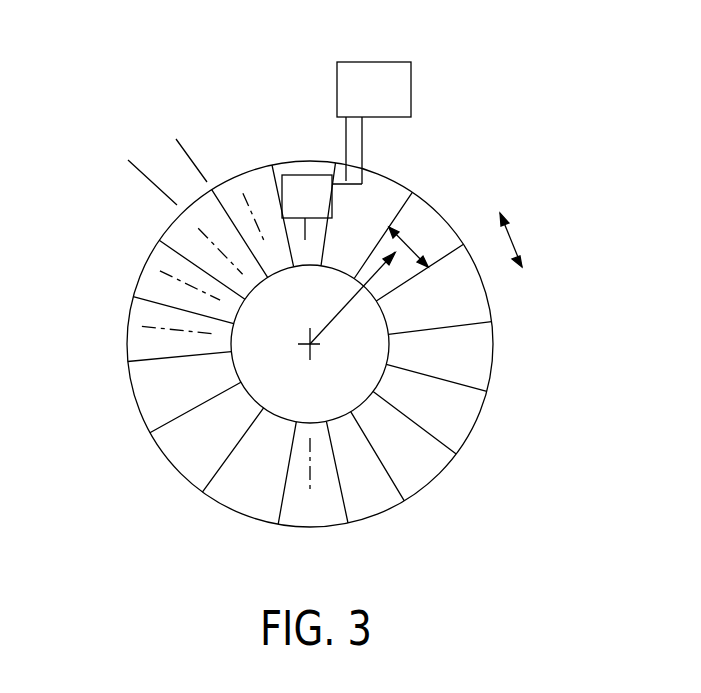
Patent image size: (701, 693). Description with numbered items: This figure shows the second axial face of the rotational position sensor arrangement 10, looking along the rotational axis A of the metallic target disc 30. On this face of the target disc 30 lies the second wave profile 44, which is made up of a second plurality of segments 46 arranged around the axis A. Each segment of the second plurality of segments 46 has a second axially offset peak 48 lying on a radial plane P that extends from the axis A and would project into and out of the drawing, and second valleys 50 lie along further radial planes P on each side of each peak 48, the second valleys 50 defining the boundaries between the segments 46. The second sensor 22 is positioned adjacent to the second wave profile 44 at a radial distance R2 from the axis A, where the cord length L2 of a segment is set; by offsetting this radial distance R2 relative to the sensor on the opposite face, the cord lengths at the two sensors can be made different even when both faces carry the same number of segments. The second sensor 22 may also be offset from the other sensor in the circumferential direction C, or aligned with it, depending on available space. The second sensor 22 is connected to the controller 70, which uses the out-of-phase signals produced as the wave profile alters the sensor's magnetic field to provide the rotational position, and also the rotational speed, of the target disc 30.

The rotational position sensor arrangement 10 is at (309, 342).
The second sensor 22 is at (295, 183).
The target disc 30 is at (487, 415).
The second wave profile 44 is at (238, 490).
The second plurality of segments 46 is at (420, 458).
The second axially offset peak 48 is at (200, 237).
The second valleys 50 is at (217, 193).
The controller 70 is at (387, 75).
The rotational axis A is at (314, 345).
The radial distance R2 is at (352, 302).
The cord length L2 is at (407, 241).
The circumferential direction C is at (515, 233).
The radial plane P is at (177, 142).